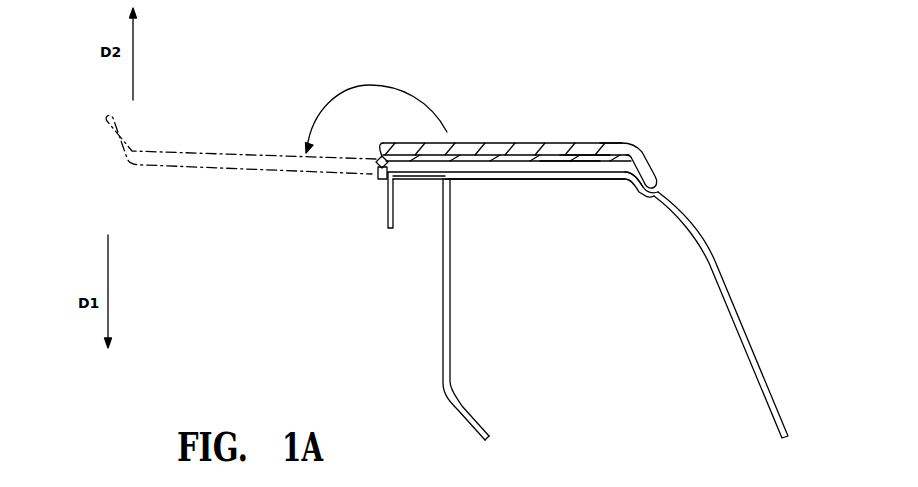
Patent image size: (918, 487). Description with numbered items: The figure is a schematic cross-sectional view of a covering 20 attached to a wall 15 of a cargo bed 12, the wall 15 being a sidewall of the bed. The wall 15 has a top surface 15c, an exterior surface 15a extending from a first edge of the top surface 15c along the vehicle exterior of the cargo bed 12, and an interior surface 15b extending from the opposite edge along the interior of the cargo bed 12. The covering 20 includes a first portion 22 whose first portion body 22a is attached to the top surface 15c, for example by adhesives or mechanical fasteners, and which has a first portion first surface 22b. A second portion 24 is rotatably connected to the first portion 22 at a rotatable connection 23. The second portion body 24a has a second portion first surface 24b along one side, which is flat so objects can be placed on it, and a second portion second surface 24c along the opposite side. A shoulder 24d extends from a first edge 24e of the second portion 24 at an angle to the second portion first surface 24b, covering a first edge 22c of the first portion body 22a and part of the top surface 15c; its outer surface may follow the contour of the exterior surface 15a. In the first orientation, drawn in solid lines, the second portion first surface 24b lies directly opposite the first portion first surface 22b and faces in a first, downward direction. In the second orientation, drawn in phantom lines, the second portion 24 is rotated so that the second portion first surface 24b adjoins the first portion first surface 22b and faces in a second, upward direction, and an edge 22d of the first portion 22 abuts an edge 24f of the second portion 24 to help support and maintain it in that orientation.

The cargo bed 12 is at (185, 377).
The wall 15 is at (750, 315).
The exterior surface 15a is at (749, 343).
The interior surface 15b is at (443, 347).
The top surface 15c is at (517, 180).
The covering 20 is at (656, 118).
The first portion 22 is at (540, 171).
The first portion body 22a is at (567, 166).
The first portion first surface 22b is at (583, 142).
The first edge of the first portion body 22c is at (646, 170).
The edge of the first portion 22d is at (378, 179).
The rotatable connection 23 is at (380, 152).
The second portion 24 is at (387, 144).
The second portion body 24a is at (480, 141).
The second portion first surface 24b is at (580, 142).
The second portion second surface 24c is at (530, 142).
The shoulder 24d is at (640, 157).
The first edge of the second portion 24e is at (621, 143).
The edge of the second portion 24f is at (382, 158).